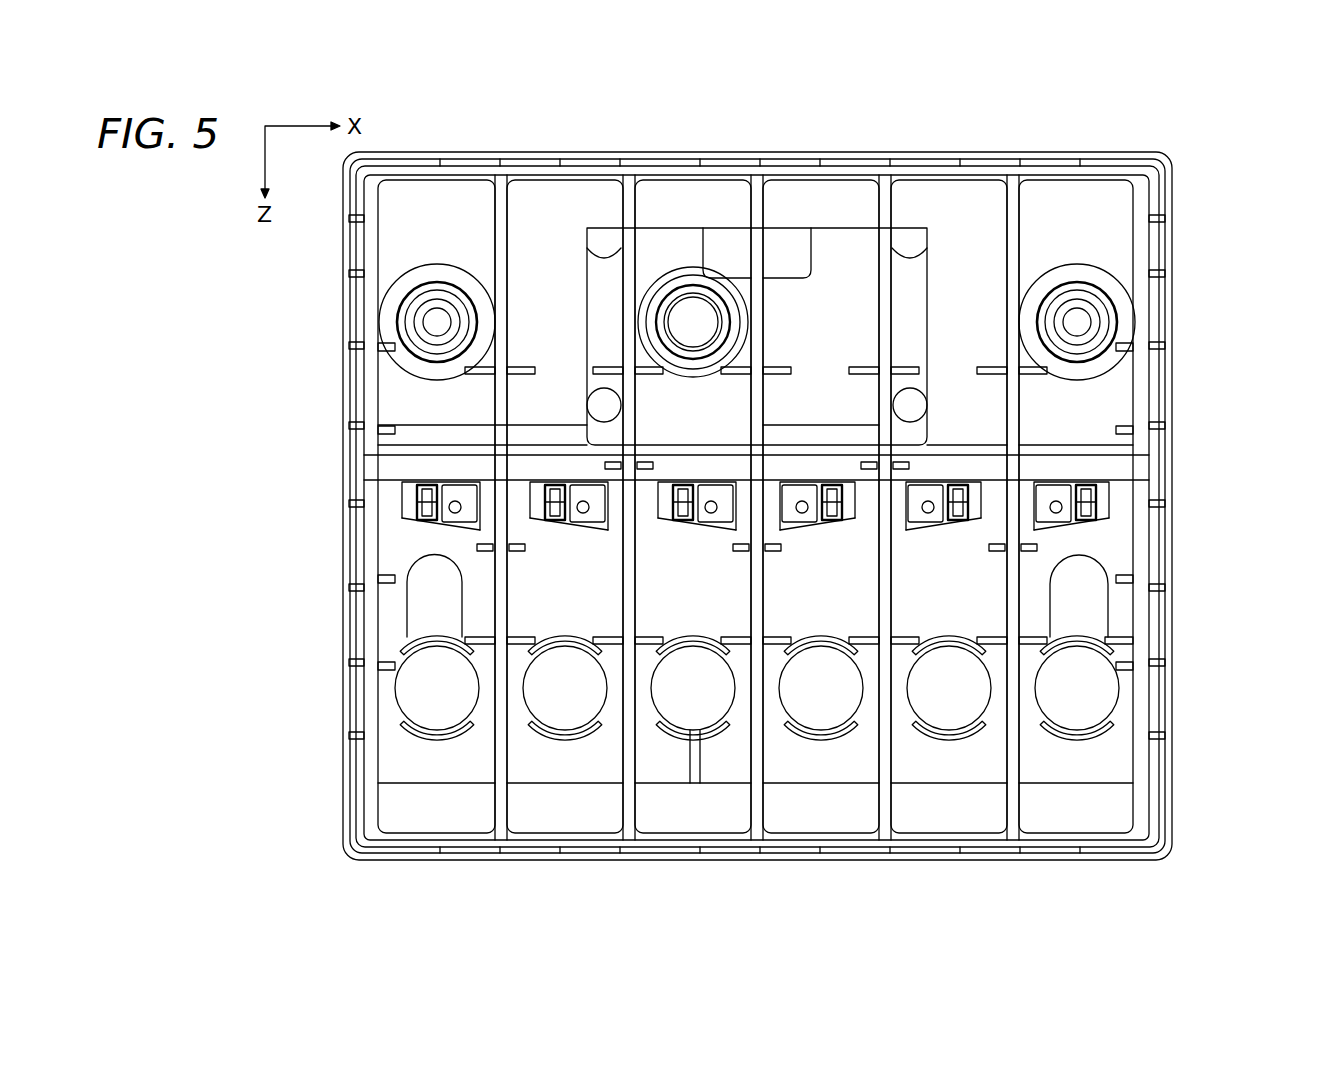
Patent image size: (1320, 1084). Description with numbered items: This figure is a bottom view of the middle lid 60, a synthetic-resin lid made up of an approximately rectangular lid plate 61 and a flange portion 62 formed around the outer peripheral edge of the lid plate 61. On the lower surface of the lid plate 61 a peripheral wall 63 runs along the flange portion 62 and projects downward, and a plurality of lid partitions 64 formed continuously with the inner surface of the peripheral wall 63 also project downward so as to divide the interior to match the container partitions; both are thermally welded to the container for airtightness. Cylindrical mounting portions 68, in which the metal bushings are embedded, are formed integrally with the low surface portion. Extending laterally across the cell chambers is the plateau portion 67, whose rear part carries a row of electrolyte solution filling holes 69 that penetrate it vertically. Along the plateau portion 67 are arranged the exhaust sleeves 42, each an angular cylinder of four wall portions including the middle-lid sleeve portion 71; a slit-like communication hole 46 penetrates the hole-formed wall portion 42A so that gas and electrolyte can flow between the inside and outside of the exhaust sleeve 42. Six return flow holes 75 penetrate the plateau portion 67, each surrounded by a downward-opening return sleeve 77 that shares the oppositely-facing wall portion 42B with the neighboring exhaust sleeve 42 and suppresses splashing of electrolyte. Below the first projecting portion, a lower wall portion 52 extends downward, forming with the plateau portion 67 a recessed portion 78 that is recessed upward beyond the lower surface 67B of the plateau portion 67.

The middle lid 60 is at (1218, 292).
The lid plate 61 is at (1123, 530).
The flange portion 62 is at (1166, 248).
The peripheral wall 63 is at (942, 178).
The lid partitions 64 is at (757, 216).
The plateau portion 67 is at (1148, 642).
The lower surface of the plateau portion 67B is at (396, 527).
The cylindrical mounting portion 68 is at (416, 294).
The electrolyte solution filling holes 69 is at (402, 700).
The communication hole 46 is at (965, 500).
The recessed portion 78 is at (405, 493).
The return sleeve 77 is at (578, 528).
The middle-lid sleeve portion 71 is at (754, 512).
The exhaust sleeve 42 is at (958, 490).
The lower wall portion 52 is at (867, 512).
The hole-formed wall portion 42A is at (867, 512).
The oppositely-facing wall portion 42B is at (1060, 506).
The return flow holes 75 is at (461, 502).